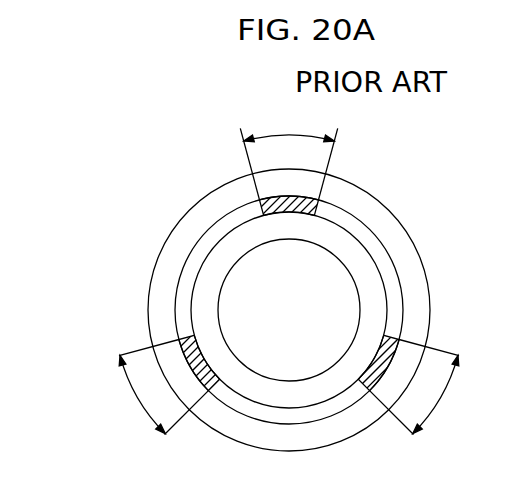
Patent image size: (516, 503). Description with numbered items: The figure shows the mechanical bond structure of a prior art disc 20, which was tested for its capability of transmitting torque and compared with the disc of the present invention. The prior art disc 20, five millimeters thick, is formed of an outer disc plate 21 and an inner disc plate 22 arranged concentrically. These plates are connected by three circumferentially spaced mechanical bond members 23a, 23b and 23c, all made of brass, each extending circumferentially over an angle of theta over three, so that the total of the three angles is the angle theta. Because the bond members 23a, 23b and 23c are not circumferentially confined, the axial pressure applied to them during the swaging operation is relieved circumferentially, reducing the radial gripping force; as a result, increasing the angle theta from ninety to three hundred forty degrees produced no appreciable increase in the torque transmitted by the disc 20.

The prior art disc 20 is at (158, 247).
The outer disc plate 21 is at (375, 201).
The inner disc plate 22 is at (288, 402).
The mechanical bond member 23a is at (265, 203).
The mechanical bond member 23b is at (208, 378).
The mechanical bond member 23c is at (372, 380).